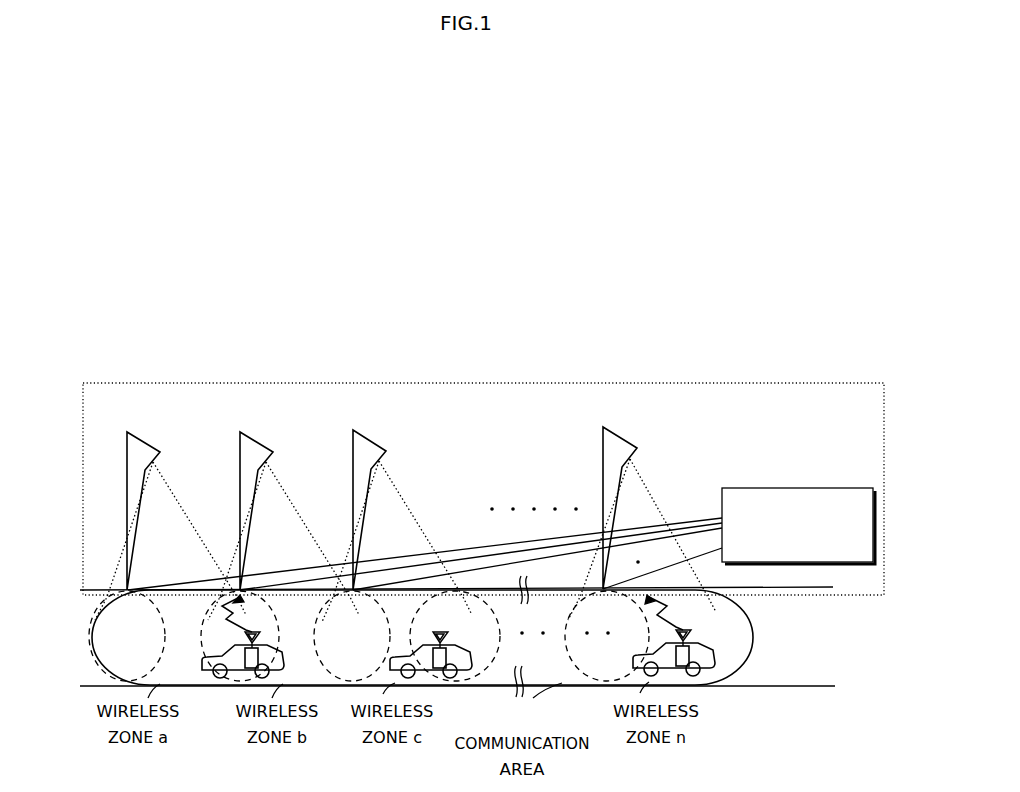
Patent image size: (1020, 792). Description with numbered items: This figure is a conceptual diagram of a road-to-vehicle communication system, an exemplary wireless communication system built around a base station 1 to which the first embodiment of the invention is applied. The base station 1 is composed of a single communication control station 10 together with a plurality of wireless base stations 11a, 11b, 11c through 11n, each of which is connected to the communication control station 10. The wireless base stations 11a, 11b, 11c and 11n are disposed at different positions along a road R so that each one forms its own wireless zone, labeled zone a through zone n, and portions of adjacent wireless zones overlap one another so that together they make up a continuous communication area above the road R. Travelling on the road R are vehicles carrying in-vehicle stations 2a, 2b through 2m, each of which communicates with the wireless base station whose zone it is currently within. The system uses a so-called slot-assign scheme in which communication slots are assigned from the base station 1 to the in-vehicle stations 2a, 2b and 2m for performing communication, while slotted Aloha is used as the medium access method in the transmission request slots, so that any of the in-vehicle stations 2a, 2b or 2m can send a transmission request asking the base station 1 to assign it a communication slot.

The base station 1 is at (694, 384).
The communication control station 10 is at (806, 487).
The wireless base station 11a is at (158, 442).
The wireless base station 11b is at (271, 442).
The wireless base station 11c is at (383, 442).
The wireless base station 11n is at (627, 437).
The in-vehicle station 2a is at (267, 656).
The in-vehicle station 2b is at (448, 659).
The in-vehicle station 2m is at (700, 648).
The road R is at (795, 642).